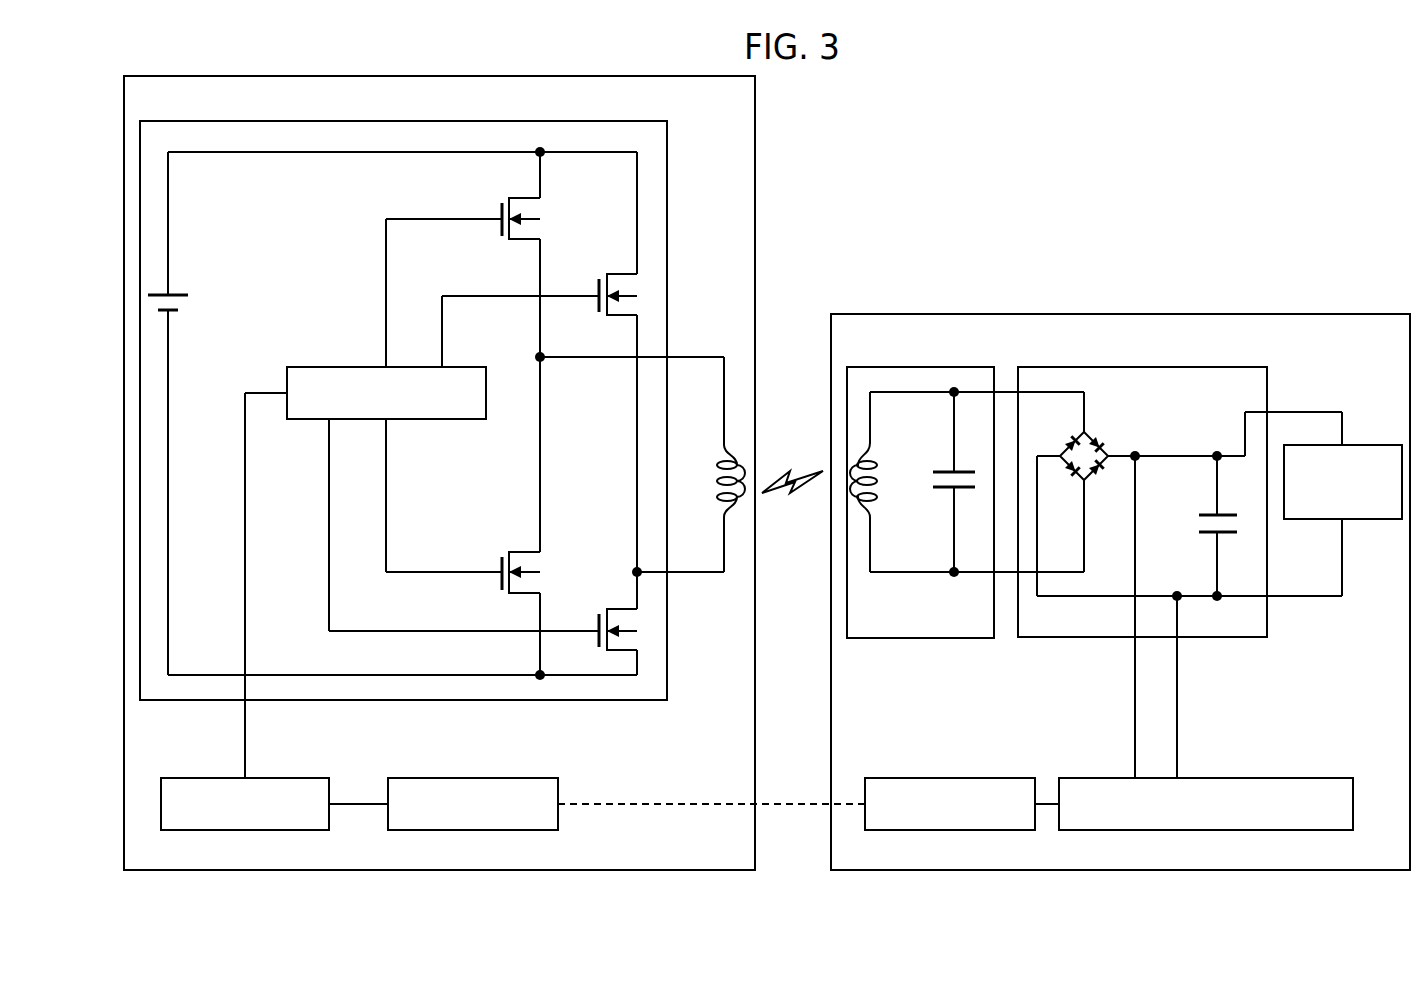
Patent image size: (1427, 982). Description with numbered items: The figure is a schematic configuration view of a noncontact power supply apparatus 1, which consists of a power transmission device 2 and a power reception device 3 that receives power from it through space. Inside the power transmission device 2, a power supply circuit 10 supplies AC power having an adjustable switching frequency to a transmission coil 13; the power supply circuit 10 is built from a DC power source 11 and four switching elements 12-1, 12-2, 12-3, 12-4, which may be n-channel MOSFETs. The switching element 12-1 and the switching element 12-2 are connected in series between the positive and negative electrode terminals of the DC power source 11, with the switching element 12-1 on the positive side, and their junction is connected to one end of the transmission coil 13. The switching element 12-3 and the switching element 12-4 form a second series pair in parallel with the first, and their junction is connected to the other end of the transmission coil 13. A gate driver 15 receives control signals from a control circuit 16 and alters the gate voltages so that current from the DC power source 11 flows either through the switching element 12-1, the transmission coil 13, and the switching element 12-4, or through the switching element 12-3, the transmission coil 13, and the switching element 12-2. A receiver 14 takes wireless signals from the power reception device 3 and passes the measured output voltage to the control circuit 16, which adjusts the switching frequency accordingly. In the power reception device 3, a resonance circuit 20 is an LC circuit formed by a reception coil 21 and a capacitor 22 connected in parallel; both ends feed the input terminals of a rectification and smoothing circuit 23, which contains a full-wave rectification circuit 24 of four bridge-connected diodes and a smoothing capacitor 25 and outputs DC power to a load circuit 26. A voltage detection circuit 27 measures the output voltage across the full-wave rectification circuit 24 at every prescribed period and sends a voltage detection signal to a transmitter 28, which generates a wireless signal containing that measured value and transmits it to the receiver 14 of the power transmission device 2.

The noncontact power supply apparatus 1 is at (1304, 272).
The power transmission device 2 is at (680, 872).
The power reception device 3 is at (1370, 873).
The power supply circuit 10 is at (507, 700).
The DC power source 11 is at (187, 303).
The switching element 12-1 is at (502, 196).
The switching element 12-2 is at (522, 551).
The switching element 12-3 is at (645, 285).
The switching element 12-4 is at (643, 622).
The transmission coil 13 is at (714, 455).
The receiver 14 is at (473, 832).
The gate driver 15 is at (322, 366).
The control circuit 16 is at (243, 832).
The resonance circuit 20 is at (920, 640).
The reception coil 21 is at (888, 480).
The capacitor 22 is at (933, 470).
The rectification and smoothing circuit 23 is at (1247, 638).
The full-wave rectification circuit 24 is at (1103, 432).
The smoothing capacitor 25 is at (1193, 518).
The load circuit 26 is at (1375, 520).
The voltage detection circuit 27 is at (1205, 832).
The transmitter 28 is at (945, 832).